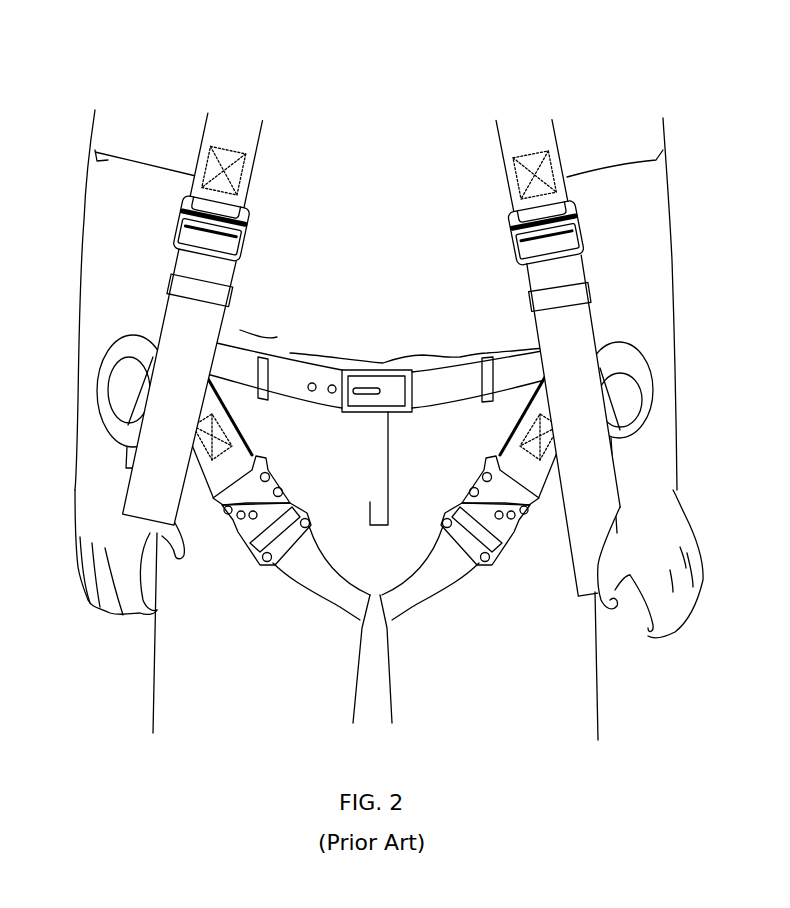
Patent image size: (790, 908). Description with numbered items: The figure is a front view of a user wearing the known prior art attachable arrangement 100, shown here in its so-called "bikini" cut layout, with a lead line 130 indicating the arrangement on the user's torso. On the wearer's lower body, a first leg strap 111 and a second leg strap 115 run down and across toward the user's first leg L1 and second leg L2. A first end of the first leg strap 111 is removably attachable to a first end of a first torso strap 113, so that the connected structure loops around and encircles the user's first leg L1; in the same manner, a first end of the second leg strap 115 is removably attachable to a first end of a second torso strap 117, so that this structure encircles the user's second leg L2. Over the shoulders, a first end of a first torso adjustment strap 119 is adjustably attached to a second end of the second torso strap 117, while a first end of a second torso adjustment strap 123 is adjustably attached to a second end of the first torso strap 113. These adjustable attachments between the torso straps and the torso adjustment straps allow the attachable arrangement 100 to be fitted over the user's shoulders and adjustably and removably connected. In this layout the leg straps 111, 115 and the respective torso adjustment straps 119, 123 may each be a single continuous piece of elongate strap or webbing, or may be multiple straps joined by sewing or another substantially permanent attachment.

The attachable arrangement 100 is at (606, 327).
The first leg strap 111 is at (303, 568).
The first torso strap 113 is at (522, 143).
The second leg strap 115 is at (443, 567).
The second torso strap 117 is at (236, 137).
The first torso adjustment strap 119 is at (208, 325).
The second torso adjustment strap 123 is at (533, 317).
The wearer torso 130 is at (377, 178).
The user's first leg L1 is at (207, 667).
The user's second leg L2 is at (540, 670).